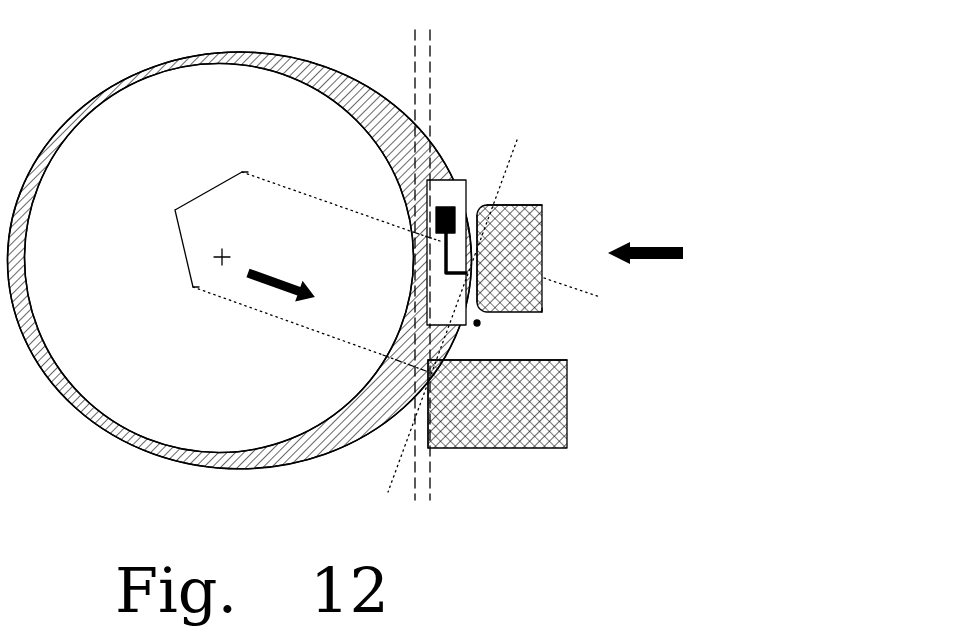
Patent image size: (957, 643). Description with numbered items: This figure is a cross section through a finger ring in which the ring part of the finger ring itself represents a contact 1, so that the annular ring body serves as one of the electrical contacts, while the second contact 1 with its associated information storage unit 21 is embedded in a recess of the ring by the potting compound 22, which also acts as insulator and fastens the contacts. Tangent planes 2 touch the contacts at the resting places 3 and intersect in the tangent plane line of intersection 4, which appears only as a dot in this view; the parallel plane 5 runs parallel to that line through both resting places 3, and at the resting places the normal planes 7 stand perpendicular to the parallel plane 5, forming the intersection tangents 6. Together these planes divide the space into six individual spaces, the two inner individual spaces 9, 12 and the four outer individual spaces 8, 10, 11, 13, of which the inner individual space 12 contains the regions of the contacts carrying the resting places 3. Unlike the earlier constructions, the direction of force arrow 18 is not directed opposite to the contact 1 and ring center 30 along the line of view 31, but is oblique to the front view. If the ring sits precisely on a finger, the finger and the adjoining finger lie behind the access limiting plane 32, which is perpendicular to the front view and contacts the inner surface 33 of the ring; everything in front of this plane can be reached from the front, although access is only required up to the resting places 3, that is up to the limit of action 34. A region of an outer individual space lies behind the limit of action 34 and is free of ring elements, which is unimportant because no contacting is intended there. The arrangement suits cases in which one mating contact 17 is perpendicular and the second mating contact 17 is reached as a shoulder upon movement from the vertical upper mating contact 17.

The contact 1 is at (468, 207).
The tangent plane 2 is at (598, 193).
The resting place 3 is at (515, 200).
The tangent plane line of intersection 4 is at (480, 325).
The parallel plane 5 is at (518, 141).
The intersection tangent 6 is at (542, 210).
The normal plane 7 is at (298, 271).
The outer individual space 8 is at (665, 208).
The inner individual space 9 is at (645, 388).
The outer individual space 10 is at (526, 527).
The outer individual space 11 is at (289, 140).
The inner individual space 12 is at (306, 247).
The outer individual space 13 is at (226, 352).
The mating contact 17 is at (542, 308).
The direction of force arrow 18 is at (283, 293).
The information storage unit 21 is at (435, 212).
The potting compound 22 is at (445, 302).
The ring center 30 is at (226, 252).
The line of view 31 is at (657, 262).
The access limiting plane 32 is at (409, 45).
The inner surface 33 is at (230, 447).
The limit of action 34 is at (431, 47).